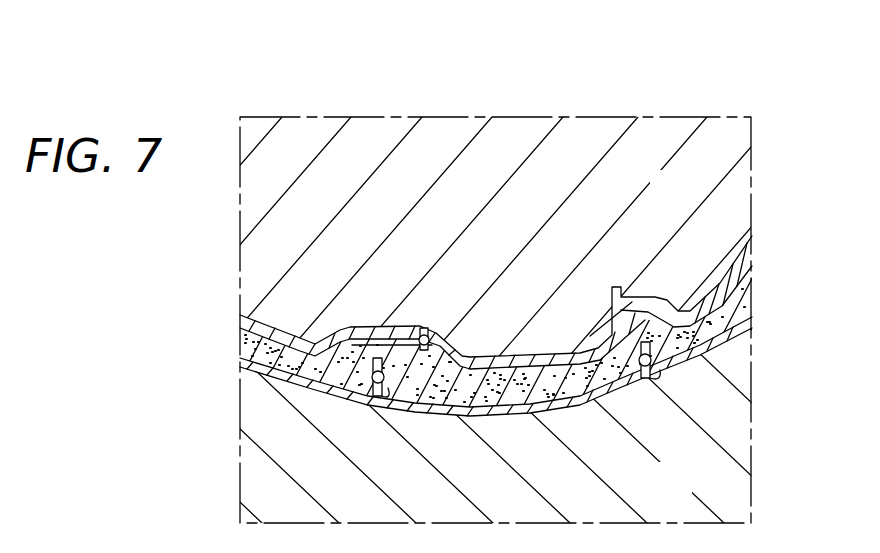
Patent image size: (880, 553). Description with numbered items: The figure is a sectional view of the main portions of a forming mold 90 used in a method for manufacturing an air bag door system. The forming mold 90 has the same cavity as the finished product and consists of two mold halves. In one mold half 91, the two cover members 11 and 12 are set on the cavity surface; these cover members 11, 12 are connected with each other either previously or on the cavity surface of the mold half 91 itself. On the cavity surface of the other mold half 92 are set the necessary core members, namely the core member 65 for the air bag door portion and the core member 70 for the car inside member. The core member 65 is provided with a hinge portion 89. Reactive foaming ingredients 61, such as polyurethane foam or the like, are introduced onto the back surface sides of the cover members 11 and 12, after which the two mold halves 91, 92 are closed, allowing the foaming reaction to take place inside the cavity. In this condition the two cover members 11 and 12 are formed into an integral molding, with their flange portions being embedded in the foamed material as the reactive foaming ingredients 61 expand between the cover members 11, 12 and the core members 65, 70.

The forming mold 90 is at (722, 98).
The mold half 91 is at (690, 491).
The mold half 92 is at (690, 199).
The reactive foaming ingredients 61 is at (752, 292).
The core member 70 is at (327, 340).
The hinge portion 89 is at (500, 357).
The core member 65 is at (573, 352).
The cover member 11 is at (480, 412).
The cover member 12 is at (327, 390).